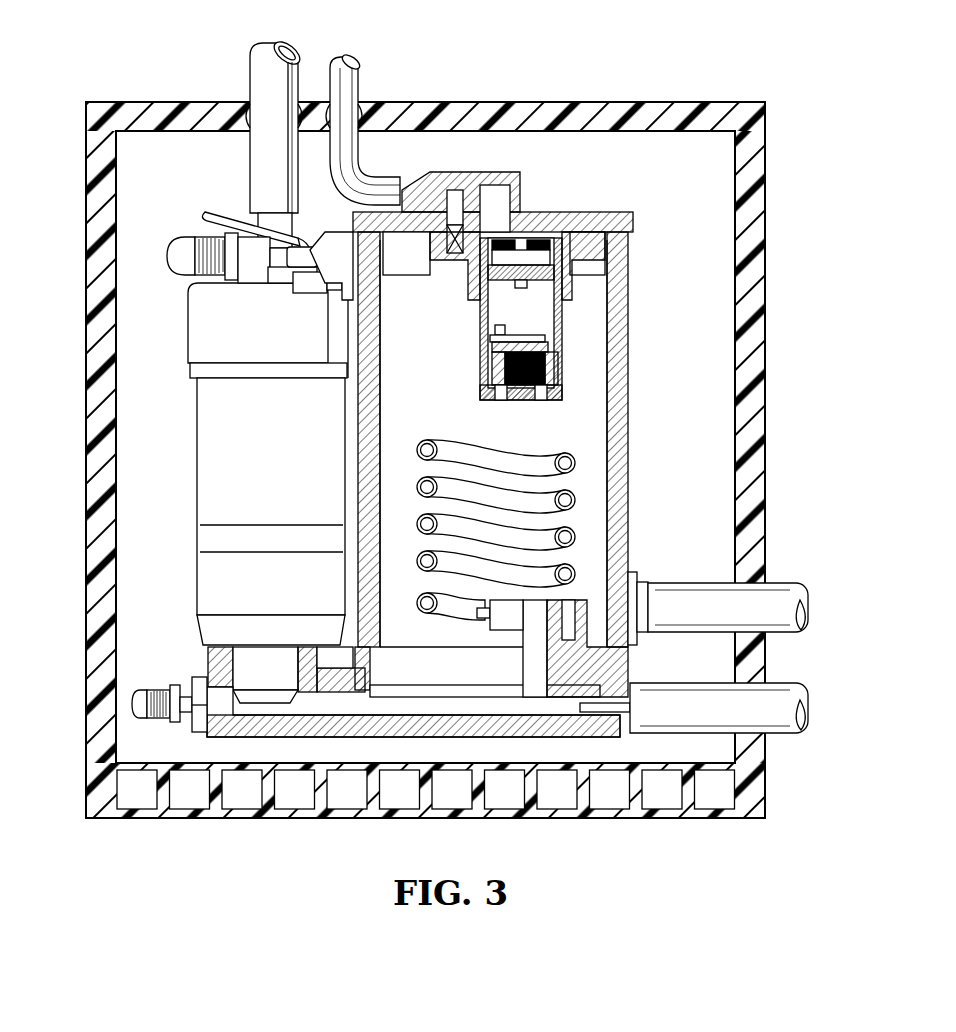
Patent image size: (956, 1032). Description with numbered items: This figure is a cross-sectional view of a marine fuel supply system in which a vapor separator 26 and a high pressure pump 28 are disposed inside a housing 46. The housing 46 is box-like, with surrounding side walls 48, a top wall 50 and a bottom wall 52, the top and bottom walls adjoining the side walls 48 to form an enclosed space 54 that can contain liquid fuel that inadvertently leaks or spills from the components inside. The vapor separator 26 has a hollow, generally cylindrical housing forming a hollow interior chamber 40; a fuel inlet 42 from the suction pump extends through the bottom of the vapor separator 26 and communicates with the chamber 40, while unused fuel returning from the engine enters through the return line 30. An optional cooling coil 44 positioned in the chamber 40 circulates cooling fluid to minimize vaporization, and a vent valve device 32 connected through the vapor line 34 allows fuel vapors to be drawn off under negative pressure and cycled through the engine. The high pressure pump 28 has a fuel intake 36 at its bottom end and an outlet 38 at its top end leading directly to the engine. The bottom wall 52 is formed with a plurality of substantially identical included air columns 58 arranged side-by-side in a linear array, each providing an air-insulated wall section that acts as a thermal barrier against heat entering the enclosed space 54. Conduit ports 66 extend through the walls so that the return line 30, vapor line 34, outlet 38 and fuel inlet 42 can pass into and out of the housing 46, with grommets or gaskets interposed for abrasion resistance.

The vapor separator 26 is at (630, 395).
The high pressure pump 28 is at (197, 460).
The return line 30 is at (780, 585).
The vent valve device 32 is at (480, 345).
The vapor line 34 is at (355, 75).
The fuel intake 36 is at (265, 705).
The outlet 38 is at (258, 57).
The hollow interior chamber 40 is at (612, 452).
The fuel inlet 42 is at (808, 722).
The cooling coil 44 is at (452, 453).
The housing 46 is at (700, 102).
The side walls 48 is at (86, 250).
The top wall 50 is at (563, 101).
The bottom wall 52 is at (168, 818).
The enclosed space 54 is at (118, 420).
The included air column 58 is at (322, 808).
The conduit ports 66 is at (258, 108).